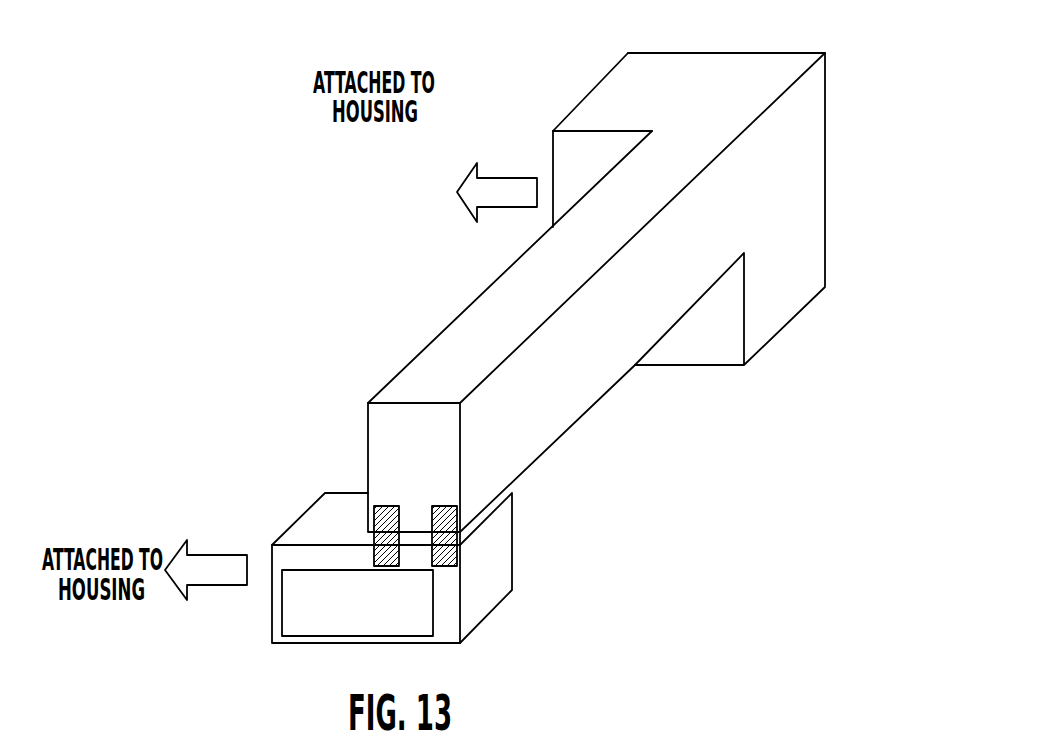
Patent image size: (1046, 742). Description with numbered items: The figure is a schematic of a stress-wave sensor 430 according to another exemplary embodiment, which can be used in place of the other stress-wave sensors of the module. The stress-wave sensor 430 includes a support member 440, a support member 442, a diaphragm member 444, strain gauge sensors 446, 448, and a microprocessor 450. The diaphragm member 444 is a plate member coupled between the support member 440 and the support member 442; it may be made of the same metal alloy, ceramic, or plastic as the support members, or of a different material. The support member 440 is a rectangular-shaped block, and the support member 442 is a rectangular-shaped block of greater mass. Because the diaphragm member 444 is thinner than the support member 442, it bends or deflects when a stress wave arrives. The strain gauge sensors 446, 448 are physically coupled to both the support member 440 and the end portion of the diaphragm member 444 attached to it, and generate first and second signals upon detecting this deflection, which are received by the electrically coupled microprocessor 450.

The stress-wave sensor 430 is at (868, 90).
The support member 442 is at (770, 207).
The diaphragm member 444 is at (435, 342).
The support member 440 is at (502, 550).
The strain gauge sensor 446 is at (388, 527).
The strain gauge sensor 448 is at (452, 520).
The microprocessor 450 is at (412, 598).